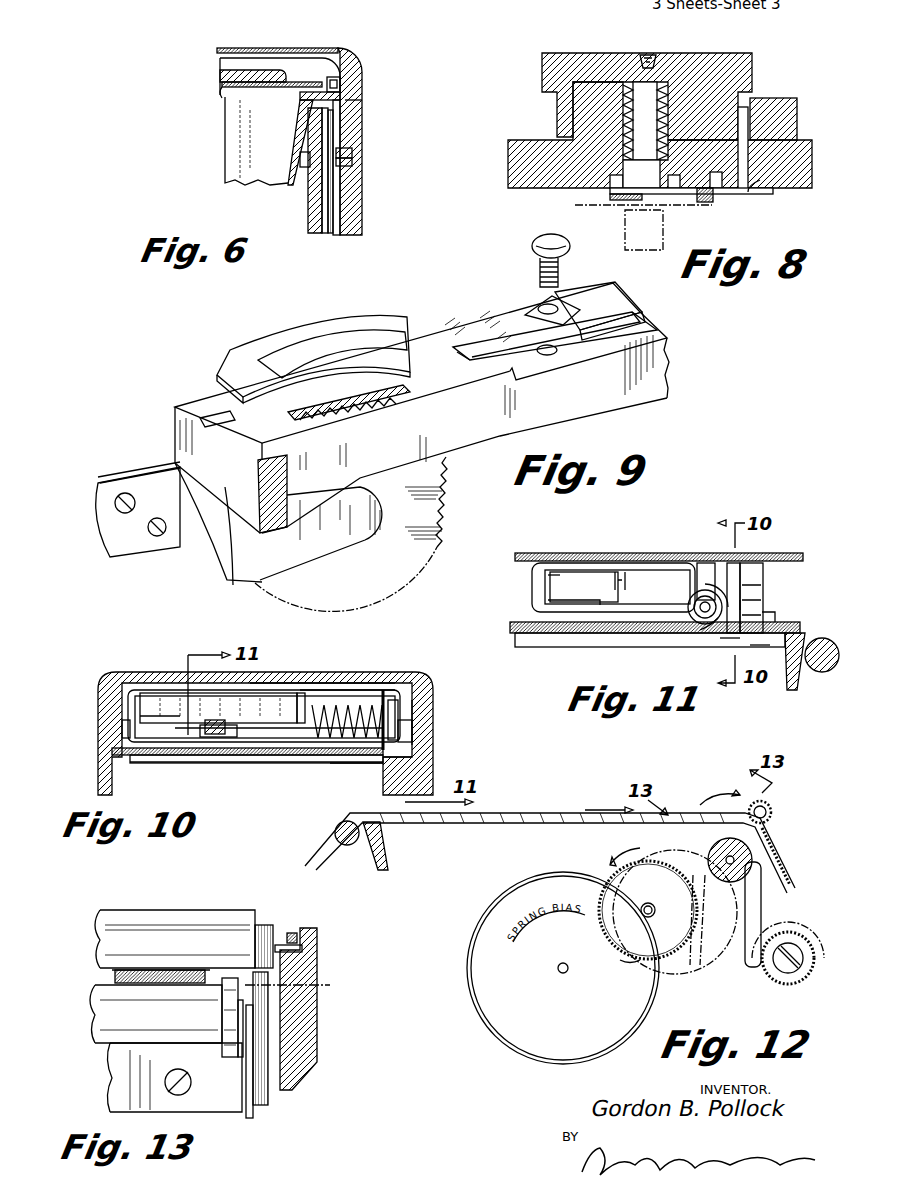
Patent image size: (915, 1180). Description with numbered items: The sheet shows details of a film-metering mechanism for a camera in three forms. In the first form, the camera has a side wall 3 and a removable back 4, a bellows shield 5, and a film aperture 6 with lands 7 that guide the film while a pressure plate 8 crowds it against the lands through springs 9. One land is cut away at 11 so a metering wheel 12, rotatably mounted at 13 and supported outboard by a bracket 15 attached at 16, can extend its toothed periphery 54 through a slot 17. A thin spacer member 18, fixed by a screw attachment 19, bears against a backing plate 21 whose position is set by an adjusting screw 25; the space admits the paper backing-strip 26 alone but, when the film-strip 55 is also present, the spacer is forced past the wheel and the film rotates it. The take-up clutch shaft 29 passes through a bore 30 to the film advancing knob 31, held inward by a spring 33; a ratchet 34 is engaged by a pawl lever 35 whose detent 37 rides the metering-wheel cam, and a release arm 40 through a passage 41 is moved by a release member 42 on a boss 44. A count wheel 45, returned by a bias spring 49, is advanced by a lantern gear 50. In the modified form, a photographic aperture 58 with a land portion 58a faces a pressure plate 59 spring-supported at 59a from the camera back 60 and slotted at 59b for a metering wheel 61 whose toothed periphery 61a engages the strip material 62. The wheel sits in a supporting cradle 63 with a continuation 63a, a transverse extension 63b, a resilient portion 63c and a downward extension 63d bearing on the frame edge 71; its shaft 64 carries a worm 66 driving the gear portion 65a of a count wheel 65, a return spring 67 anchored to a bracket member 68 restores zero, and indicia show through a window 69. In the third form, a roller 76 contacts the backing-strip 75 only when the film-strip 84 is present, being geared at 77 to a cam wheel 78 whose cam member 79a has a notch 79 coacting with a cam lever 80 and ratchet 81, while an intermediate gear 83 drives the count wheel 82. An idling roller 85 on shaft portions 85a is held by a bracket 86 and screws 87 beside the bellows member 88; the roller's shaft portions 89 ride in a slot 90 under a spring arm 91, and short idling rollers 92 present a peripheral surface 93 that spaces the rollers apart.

In FIG. 8, the side wall 3 is at (812, 141).
In FIG. 6, the removable back 4 is at (308, 48).
In FIG. 6, the bellows shield 5 is at (300, 162).
In FIG. 6, the film aperture 6 is at (248, 98).
In FIG. 9, the film aperture 6 is at (606, 410).
In FIG. 9, the lands 7 is at (616, 303).
In FIG. 6, the pressure plate 8 is at (283, 68).
In FIG. 6, the springs 9 is at (252, 60).
In FIG. 6, the cut-away portion 11 is at (342, 98).
In FIG. 6, the metering wheel 12 is at (310, 205).
In FIG. 9, the metering wheel 12 is at (445, 506).
In FIG. 6, the pivot mounting 13 is at (346, 163).
In FIG. 6, the bracket 15 is at (293, 185).
In FIG. 9, the bracket 15 is at (315, 548).
In FIG. 9, the bracket attachment 16 is at (168, 535).
In FIG. 6, the slot 17 is at (362, 106).
In FIG. 9, the slot 17 is at (393, 396).
In FIG. 9, the spacer member 18 is at (407, 318).
In FIG. 9, the screw attachment 19 is at (562, 283).
In FIG. 6, the backing plate 21 is at (346, 62).
In FIG. 6, the adjusting screw 25 is at (346, 79).
In FIG. 6, the paper backing-strip 26 is at (220, 74).
In FIG. 8, the shaft 29 is at (623, 162).
In FIG. 8, the bore 30 is at (660, 60).
In FIG. 8, the film advancing knob 31 is at (753, 74).
In FIG. 8, the spring 33 is at (642, 56).
In FIG. 8, the ratchet 34 is at (618, 200).
In FIG. 8, the pawl lever 35 is at (706, 203).
In FIG. 8, the detent 37 is at (775, 192).
In FIG. 8, the release arm 40 is at (743, 195).
In FIG. 8, the passage 41 is at (760, 182).
In FIG. 8, the release member 42 is at (780, 98).
In FIG. 8, the boss 44 is at (663, 228).
In FIG. 6, the count wheel 45 is at (338, 236).
In FIG. 6, the bias spring 49 is at (330, 235).
In FIG. 6, the lantern gear 50 is at (352, 155).
In FIG. 9, the toothed periphery 54 is at (388, 402).
In FIG. 6, the film-strip 55 is at (222, 92).
In FIG. 11, the photographic aperture 58 is at (580, 647).
In FIG. 10, the photographic aperture 58 is at (122, 770).
In FIG. 11, the film land portion 58a is at (720, 640).
In FIG. 10, the film land portion 58a is at (382, 765).
In FIG. 11, the film pressure plate 59 is at (795, 636).
In FIG. 10, the film pressure plate 59 is at (272, 762).
In FIG. 11, the spring support 59a is at (765, 612).
In FIG. 11, the slot 59b is at (752, 647).
In FIG. 10, the slot 59b is at (416, 756).
In FIG. 11, the camera back 60 is at (684, 560).
In FIG. 10, the camera back 60 is at (168, 672).
In FIG. 11, the metering wheel 61 is at (745, 580).
In FIG. 10, the metering wheel 61 is at (400, 720).
In FIG. 11, the toothed periphery 61a is at (742, 600).
In FIG. 10, the toothed periphery 61a is at (385, 695).
In FIG. 11, the strip material 62 is at (515, 630).
In FIG. 10, the strip material 62 is at (245, 756).
In FIG. 11, the supporting cradle 63 is at (735, 590).
In FIG. 10, the supporting cradle 63 is at (300, 690).
In FIG. 10, the cradle continuation 63a is at (120, 735).
In FIG. 11, the transverse extension 63b is at (545, 590).
In FIG. 10, the transverse extension 63b is at (213, 740).
In FIG. 10, the resilient supporting portion 63c is at (355, 684).
In FIG. 10, the cradle extension 63d is at (415, 740).
In FIG. 11, the shaft 64 is at (688, 611).
In FIG. 10, the shaft 64 is at (292, 745).
In FIG. 11, the count wheel 65 is at (548, 576).
In FIG. 10, the count wheel 65 is at (218, 708).
In FIG. 11, the gear portion 65a is at (545, 603).
In FIG. 10, the gear portion 65a is at (170, 710).
In FIG. 11, the worm 66 is at (762, 622).
In FIG. 10, the worm 66 is at (203, 730).
In FIG. 11, the return spring 67 is at (705, 636).
In FIG. 10, the return spring 67 is at (340, 728).
In FIG. 11, the bracket member 68 is at (712, 580).
In FIG. 10, the bracket member 68 is at (320, 708).
In FIG. 10, the window 69 is at (273, 682).
In FIG. 10, the camera frame edge 71 is at (414, 744).
In FIG. 12, the film backing-strip 75 is at (562, 817).
In FIG. 13, the film backing-strip 75 is at (112, 972).
In FIG. 12, the roller 76 is at (772, 808).
In FIG. 13, the roller 76 is at (175, 939).
In FIG. 12, the gearing 77 is at (770, 817).
In FIG. 13, the gearing 77 is at (262, 920).
In FIG. 12, the cam wheel 78 is at (778, 838).
In FIG. 13, the cam wheel 78 is at (265, 1100).
In FIG. 12, the notch 79 is at (654, 910).
In FIG. 12, the cam member 79a is at (690, 868).
In FIG. 13, the cam member 79a is at (252, 1118).
In FIG. 12, the cam lever 80 is at (762, 924).
In FIG. 12, the ratchet 81 is at (776, 985).
In FIG. 12, the count wheel 82 is at (508, 1022).
In FIG. 12, the intermediate gear 83 is at (690, 958).
In FIG. 12, the film-strip 84 is at (560, 824).
In FIG. 13, the film-strip 84 is at (115, 980).
In FIG. 12, the idling roller 85 is at (755, 862).
In FIG. 13, the idling roller 85 is at (156, 1014).
In FIG. 13, the shaft portions 85a is at (307, 986).
In FIG. 13, the bracket 86 is at (234, 1065).
In FIG. 13, the screws 87 is at (184, 1070).
In FIG. 12, the bellows member 88 is at (701, 965).
In FIG. 13, the shaft portions 89 is at (315, 934).
In FIG. 13, the slot 90 is at (283, 928).
In FIG. 13, the spring arm 91 is at (292, 933).
In FIG. 13, the idling rollers 92 is at (222, 1005).
In FIG. 13, the peripheral surface 93 is at (232, 975).